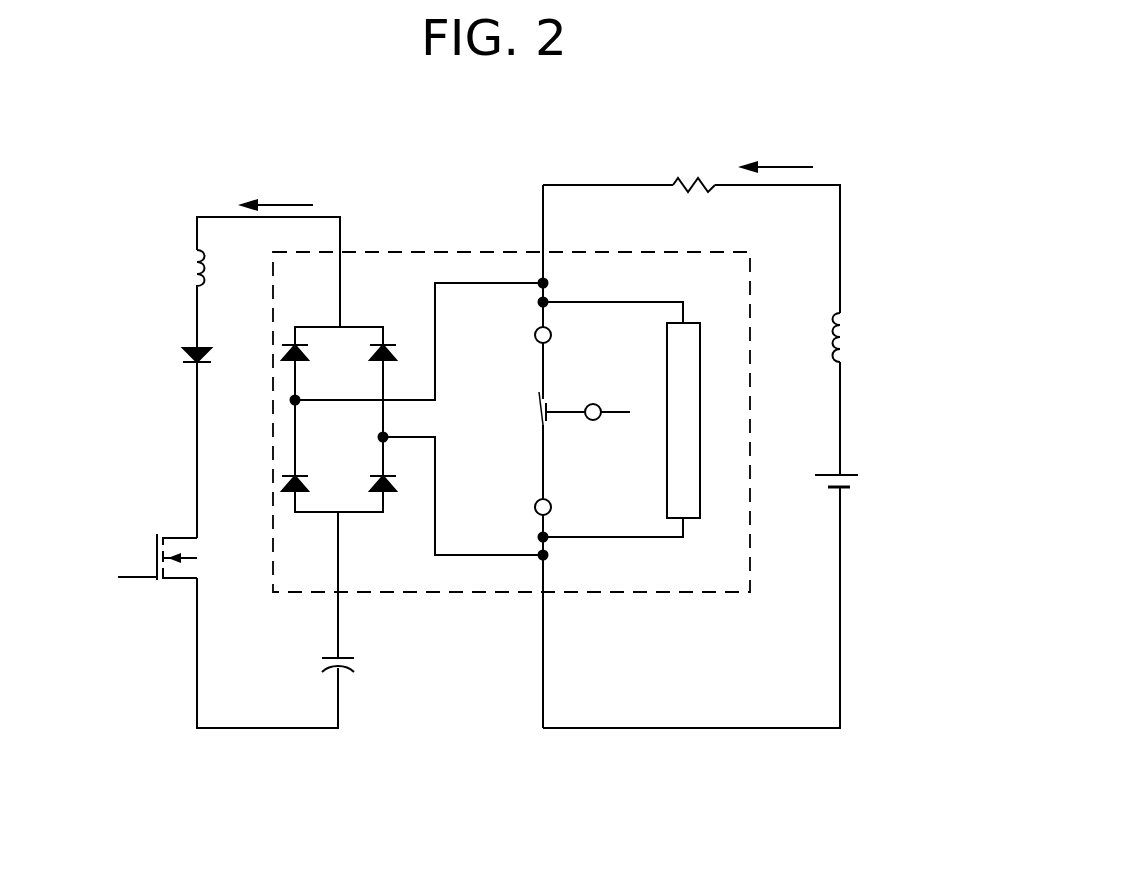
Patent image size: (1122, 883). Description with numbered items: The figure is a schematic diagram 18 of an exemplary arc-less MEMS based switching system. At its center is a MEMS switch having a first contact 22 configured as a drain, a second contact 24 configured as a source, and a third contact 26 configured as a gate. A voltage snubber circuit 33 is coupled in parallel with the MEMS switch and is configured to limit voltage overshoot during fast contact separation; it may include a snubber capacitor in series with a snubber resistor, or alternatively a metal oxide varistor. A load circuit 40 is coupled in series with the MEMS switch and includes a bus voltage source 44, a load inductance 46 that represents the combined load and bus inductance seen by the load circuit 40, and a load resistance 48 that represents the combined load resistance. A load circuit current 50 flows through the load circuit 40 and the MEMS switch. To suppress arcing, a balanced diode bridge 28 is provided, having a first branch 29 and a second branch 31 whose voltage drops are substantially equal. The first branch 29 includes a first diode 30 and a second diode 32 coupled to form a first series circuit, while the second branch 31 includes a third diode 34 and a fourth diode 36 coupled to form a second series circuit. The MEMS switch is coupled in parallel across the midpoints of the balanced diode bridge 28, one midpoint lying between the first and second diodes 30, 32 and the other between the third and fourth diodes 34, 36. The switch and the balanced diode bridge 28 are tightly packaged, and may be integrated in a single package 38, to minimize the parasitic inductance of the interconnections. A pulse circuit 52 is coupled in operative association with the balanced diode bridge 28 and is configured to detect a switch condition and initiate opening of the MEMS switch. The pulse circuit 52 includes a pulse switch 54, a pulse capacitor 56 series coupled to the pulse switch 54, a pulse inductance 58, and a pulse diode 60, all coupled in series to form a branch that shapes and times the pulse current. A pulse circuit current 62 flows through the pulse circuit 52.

The schematic diagram 18 is at (808, 112).
The first contact 22 is at (536, 333).
The second contact 24 is at (533, 508).
The third contact 26 is at (596, 422).
The balanced diode bridge 28 is at (356, 327).
The first branch 29 is at (282, 428).
The first diode D1 30 is at (300, 363).
The second branch 31 is at (390, 420).
The second diode D2 32 is at (300, 476).
The voltage snubber circuit 33 is at (700, 385).
The third diode D3 34 is at (380, 363).
The fourth diode D4 36 is at (378, 476).
The single package 38 is at (474, 252).
The load circuit 40 is at (737, 748).
The voltage source V_BUS 44 is at (830, 474).
The load inductance L_LOAD 46 is at (835, 365).
The load resistance R_LOAD 48 is at (693, 178).
The load circuit current I_LOAD 50 is at (768, 166).
The pulse circuit 52 is at (283, 747).
The pulse switch 54 is at (180, 582).
The pulse capacitor C_PULSE 56 is at (347, 675).
The pulse inductance L_PULSE 58 is at (193, 252).
The first diode D_P 60 is at (189, 368).
The pulse circuit current I_PULSE 62 is at (266, 202).